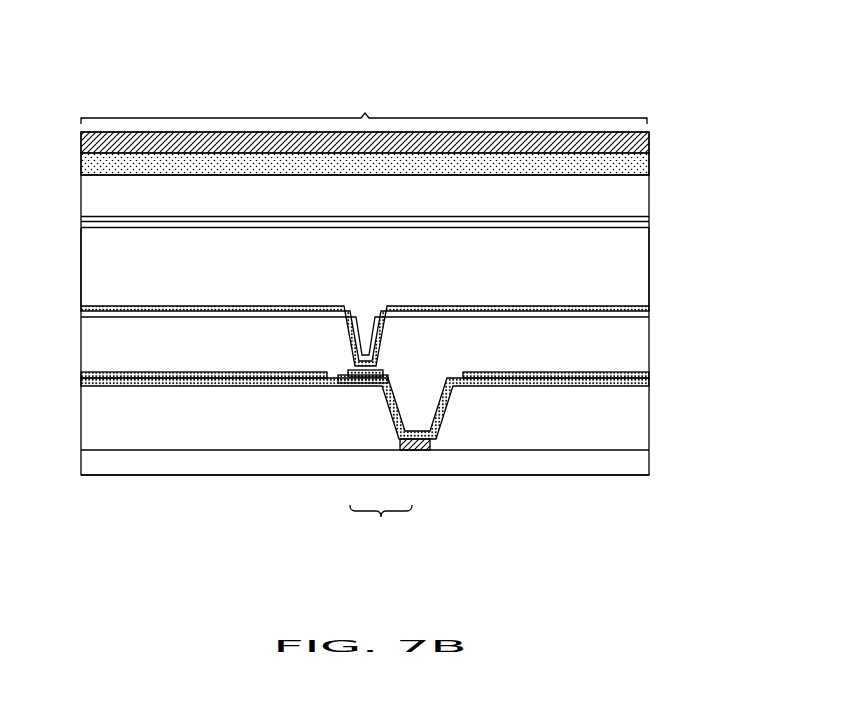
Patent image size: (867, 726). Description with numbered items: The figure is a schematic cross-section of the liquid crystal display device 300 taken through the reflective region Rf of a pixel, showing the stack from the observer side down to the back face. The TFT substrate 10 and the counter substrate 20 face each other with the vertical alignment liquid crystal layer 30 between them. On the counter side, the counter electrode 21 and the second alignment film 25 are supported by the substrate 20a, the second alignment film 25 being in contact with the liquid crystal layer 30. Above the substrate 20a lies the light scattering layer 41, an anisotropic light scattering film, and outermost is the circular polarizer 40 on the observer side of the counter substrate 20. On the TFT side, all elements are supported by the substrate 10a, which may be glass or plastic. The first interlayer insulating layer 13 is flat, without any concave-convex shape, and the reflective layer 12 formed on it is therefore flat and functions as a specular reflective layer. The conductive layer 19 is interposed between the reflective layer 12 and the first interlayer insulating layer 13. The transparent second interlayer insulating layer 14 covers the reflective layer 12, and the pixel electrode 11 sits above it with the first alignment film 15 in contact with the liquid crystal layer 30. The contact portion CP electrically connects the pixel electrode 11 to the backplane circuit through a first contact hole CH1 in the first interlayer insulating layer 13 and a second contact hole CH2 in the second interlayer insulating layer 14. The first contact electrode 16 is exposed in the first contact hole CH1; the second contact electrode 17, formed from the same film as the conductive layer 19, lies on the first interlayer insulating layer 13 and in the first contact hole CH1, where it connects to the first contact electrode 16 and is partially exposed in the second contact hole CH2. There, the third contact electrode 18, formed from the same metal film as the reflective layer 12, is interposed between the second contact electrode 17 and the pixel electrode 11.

The liquid crystal display device 300 is at (677, 88).
The reflective region Rf is at (364, 106).
The circular polarizer 40 is at (651, 140).
The light scattering layer 41 is at (651, 161).
The counter substrate 20 is at (67, 175).
The substrate 20a is at (632, 197).
The counter electrode 21 is at (651, 221).
The second alignment film 25 is at (651, 228).
The liquid crystal layer 30 is at (67, 230).
The TFT substrate 10 is at (67, 307).
The first alignment film 15 is at (651, 306).
The pixel electrode 11 is at (419, 315).
The second contact hole CH2 is at (365, 331).
The second interlayer insulating layer 14 is at (633, 346).
The reflective layer 12 is at (527, 371).
The third contact electrode 18 is at (355, 387).
The conductive layer 19 is at (651, 382).
The second contact electrode 17 is at (369, 380).
The first contact hole CH1 is at (417, 411).
The first contact electrode 16 is at (410, 455).
The first interlayer insulating layer 13 is at (633, 421).
The substrate 10a is at (633, 465).
The contact portion CP is at (381, 526).